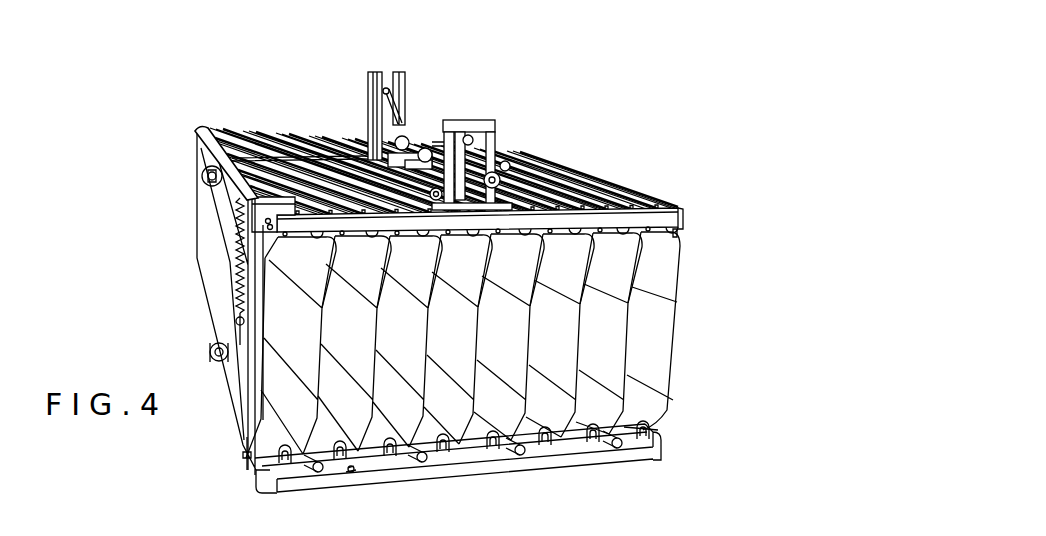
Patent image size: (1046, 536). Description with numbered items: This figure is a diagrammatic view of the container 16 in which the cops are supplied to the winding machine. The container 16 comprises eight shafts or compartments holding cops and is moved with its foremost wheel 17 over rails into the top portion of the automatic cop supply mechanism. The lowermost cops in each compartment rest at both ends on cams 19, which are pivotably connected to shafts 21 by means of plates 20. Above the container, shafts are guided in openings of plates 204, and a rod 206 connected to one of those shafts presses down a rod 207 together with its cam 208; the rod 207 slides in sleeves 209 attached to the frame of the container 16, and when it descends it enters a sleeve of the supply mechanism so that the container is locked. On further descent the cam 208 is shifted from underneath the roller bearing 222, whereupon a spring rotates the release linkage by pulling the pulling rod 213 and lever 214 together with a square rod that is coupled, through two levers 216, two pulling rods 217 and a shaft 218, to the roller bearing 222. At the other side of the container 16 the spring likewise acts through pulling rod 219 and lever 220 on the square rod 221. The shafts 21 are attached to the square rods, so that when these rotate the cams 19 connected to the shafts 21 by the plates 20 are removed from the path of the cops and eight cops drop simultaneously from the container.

The container 16 is at (201, 224).
The foremost wheel 17 is at (202, 176).
The cam 19 is at (352, 472).
The plate 20 is at (339, 472).
The shaft 21 is at (316, 474).
The plate 204 is at (368, 85).
The rod 206 is at (386, 88).
The rod 207 is at (528, 169).
The cam 208 is at (494, 168).
The sleeve 209 is at (404, 122).
The pulling rod 213 is at (235, 319).
The lever 214 is at (268, 156).
The lever 216 is at (442, 202).
The pulling rod 217 is at (420, 136).
The shaft 218 is at (452, 121).
The pulling rod 219 is at (245, 438).
The lever 220 is at (256, 477).
The square rod 221 is at (567, 440).
The roller bearing 222 is at (472, 136).